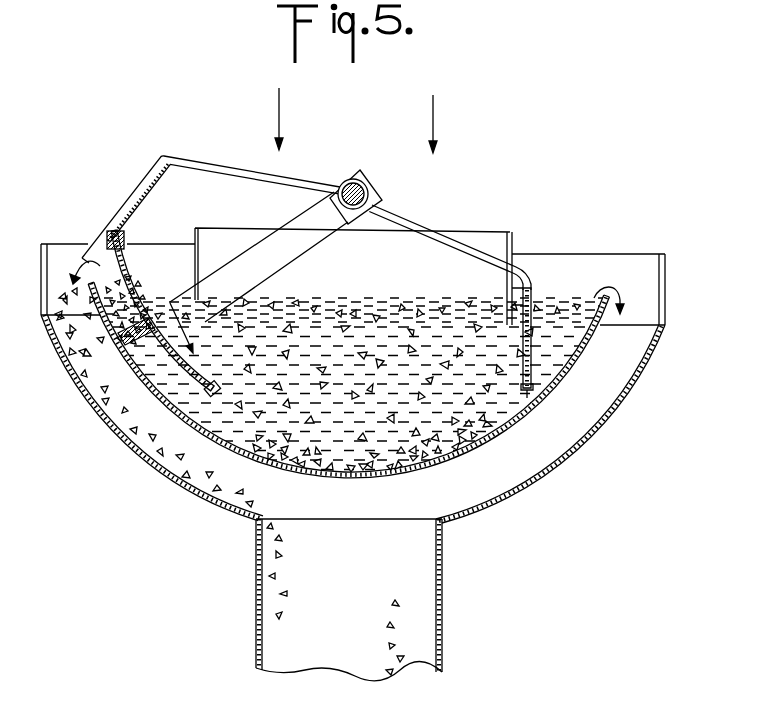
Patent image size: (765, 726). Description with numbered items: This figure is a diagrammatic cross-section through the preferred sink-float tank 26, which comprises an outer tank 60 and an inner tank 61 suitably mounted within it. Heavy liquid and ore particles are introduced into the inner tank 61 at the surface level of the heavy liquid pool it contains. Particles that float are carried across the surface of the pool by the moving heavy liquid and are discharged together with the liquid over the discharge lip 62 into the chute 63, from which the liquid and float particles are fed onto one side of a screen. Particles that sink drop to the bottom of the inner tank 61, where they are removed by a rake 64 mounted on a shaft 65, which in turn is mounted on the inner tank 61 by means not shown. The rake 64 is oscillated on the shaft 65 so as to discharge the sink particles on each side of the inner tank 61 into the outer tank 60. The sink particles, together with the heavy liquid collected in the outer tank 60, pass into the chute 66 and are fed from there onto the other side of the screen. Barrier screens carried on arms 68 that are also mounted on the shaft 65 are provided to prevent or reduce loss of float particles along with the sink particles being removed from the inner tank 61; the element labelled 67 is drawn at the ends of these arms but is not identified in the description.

The sink-float tank 26 is at (547, 480).
The outer tank 60 is at (115, 437).
The inner tank 61 is at (214, 440).
The discharge lip 62 is at (425, 312).
The chute 63 is at (509, 232).
The rake 64 is at (248, 257).
The shaft 65 is at (353, 179).
The chute 66 is at (443, 640).
The scraper blade 67 is at (128, 202).
The arms 68 is at (230, 165).